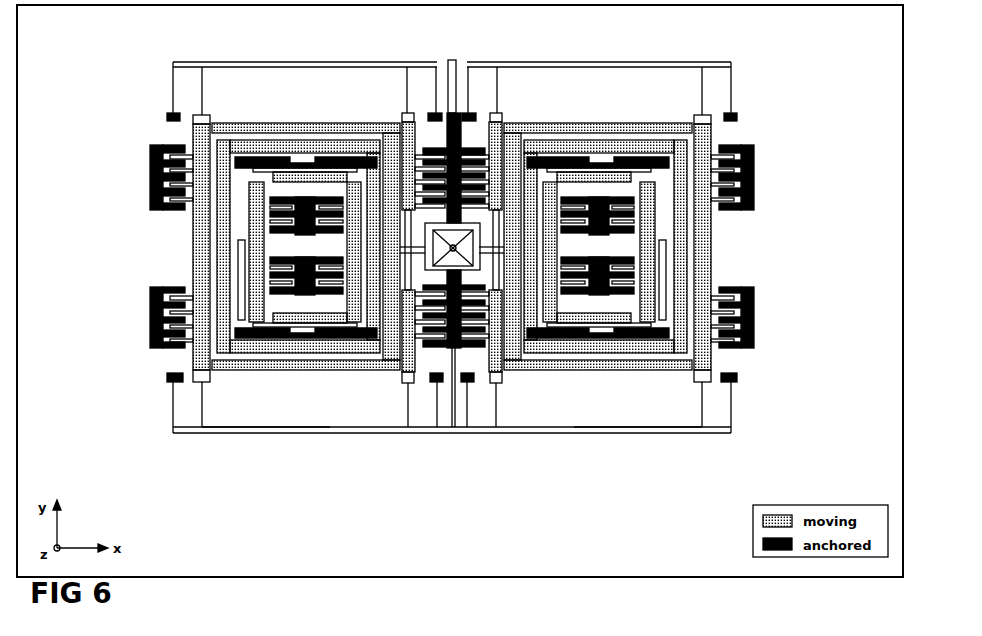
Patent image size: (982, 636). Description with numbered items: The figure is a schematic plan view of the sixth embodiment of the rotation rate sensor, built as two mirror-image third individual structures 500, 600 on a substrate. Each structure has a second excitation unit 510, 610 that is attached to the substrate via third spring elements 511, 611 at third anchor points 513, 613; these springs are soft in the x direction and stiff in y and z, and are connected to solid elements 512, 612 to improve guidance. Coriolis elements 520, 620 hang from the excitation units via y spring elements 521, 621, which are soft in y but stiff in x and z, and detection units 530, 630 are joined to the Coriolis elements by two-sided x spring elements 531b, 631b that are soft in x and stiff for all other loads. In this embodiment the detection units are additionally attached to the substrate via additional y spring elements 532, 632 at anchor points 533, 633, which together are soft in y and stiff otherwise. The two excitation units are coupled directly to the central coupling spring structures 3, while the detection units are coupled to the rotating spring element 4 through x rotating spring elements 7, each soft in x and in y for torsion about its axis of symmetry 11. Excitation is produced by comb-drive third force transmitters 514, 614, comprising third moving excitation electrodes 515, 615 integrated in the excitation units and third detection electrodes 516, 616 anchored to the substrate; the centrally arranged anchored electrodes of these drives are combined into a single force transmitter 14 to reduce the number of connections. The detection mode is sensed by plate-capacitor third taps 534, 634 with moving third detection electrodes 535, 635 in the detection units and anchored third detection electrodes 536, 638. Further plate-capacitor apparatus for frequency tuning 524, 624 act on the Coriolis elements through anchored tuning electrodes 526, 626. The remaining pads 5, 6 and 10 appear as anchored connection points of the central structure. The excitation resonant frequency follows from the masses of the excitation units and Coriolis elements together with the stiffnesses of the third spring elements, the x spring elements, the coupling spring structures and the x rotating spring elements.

The third individual structure 500 is at (155, 107).
The second excitation unit 510 is at (200, 137).
The Coriolis element 520 is at (250, 140).
The detection unit 530 is at (273, 172).
The additional y spring element 532 is at (300, 160).
The anchor point 533 is at (345, 150).
The third tap 534 is at (273, 205).
The moving third detection electrode 535 is at (262, 237).
The third detection electrode 536 is at (300, 240).
The x spring element 531b is at (165, 157).
The third force transmitter 514 is at (142, 305).
The third moving excitation electrode 515 is at (148, 327).
The third detection electrode 516 is at (150, 347).
The third anchor point 513 is at (170, 382).
The third spring element 511 is at (175, 383).
The solid element 512 is at (262, 432).
The y spring element 521 is at (284, 365).
The apparatus for frequency tuning 524 is at (307, 335).
The tuning electrode 526 is at (350, 337).
The rotating spring element 4 is at (410, 113).
The coupling spring structure 3 is at (448, 113).
The force transmitter 14 is at (458, 112).
The anchor pad 5 is at (470, 113).
The suspension column 6 is at (496, 113).
The x rotating spring element 7 is at (437, 382).
The anchor pad 10 is at (470, 382).
The axis of symmetry 11 is at (410, 383).
The third individual structure 600 is at (747, 107).
The second excitation unit 610 is at (729, 113).
The Coriolis element 620 is at (654, 142).
The detection unit 630 is at (628, 172).
The additional y spring element 632 is at (610, 160).
The anchor point 633 is at (594, 150).
The third tap 634 is at (631, 205).
The moving third detection electrode 635 is at (642, 237).
The anchored comb 638 is at (604, 240).
The x spring element 631b is at (739, 157).
The third force transmitter 614 is at (762, 305).
The third moving excitation electrode 615 is at (756, 327).
The third detection electrode 616 is at (754, 347).
The third anchor point 613 is at (734, 382).
The third spring element 611 is at (729, 383).
The solid element 612 is at (642, 432).
The y spring element 621 is at (620, 365).
The apparatus for frequency tuning 624 is at (597, 335).
The tuning electrode 626 is at (554, 337).